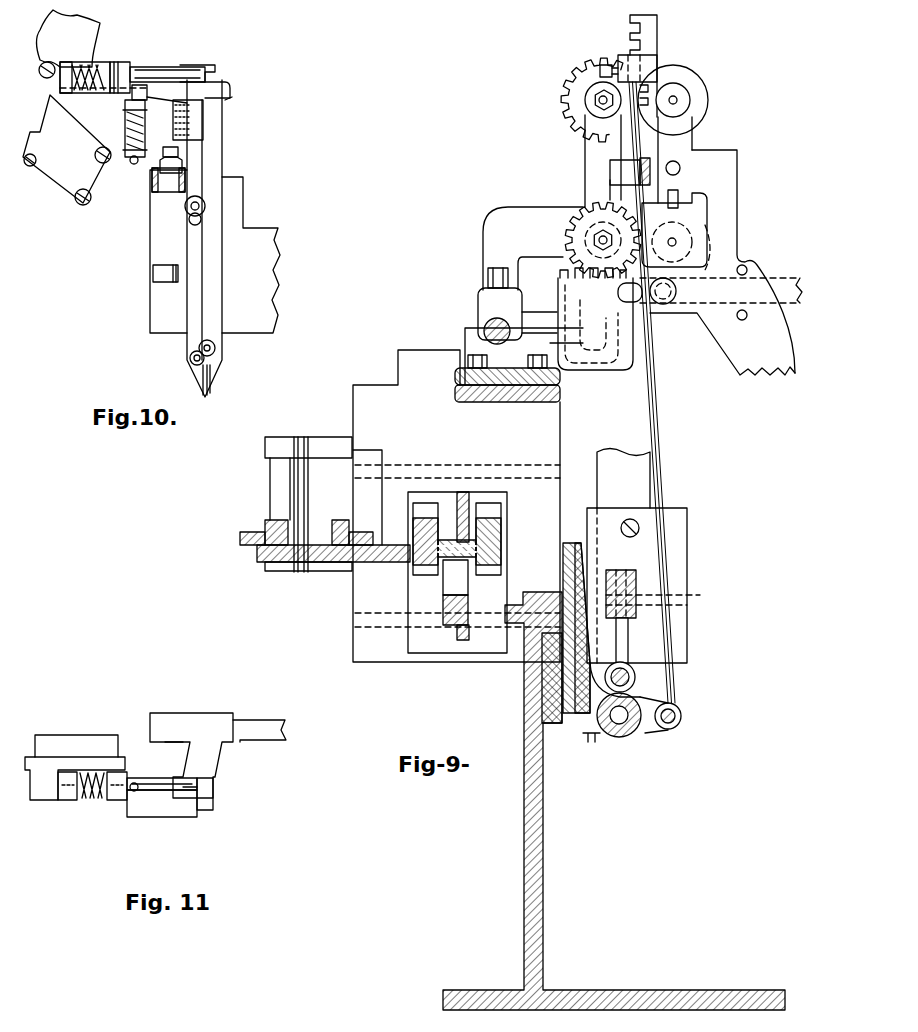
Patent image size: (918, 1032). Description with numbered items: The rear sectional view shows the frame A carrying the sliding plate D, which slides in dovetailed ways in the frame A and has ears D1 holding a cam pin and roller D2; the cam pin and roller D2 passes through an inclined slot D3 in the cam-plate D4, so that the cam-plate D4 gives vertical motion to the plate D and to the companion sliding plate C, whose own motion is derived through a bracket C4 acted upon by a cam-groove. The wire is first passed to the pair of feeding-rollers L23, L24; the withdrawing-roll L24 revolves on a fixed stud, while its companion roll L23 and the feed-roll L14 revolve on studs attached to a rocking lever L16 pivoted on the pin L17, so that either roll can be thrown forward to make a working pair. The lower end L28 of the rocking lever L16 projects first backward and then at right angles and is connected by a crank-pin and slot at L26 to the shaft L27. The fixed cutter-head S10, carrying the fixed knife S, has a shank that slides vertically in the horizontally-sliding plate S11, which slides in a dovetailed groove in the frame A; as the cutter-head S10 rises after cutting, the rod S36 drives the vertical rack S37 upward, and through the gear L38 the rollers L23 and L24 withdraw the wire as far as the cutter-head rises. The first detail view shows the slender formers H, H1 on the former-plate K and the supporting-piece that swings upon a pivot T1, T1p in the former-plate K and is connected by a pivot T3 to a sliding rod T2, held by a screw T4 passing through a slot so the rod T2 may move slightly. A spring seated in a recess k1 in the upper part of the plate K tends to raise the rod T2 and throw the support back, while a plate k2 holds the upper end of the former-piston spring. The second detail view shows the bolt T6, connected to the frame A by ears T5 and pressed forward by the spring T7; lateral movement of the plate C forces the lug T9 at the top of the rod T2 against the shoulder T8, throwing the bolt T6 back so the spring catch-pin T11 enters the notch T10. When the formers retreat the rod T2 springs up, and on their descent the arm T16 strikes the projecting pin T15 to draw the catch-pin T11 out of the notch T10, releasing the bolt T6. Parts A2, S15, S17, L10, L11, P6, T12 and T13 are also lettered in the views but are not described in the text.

In FIG. 9, the frame A is at (524, 840).
In FIG. 10, the frame A is at (69, 44).
In FIG. 11, the frame A is at (75, 757).
In FIG. 9, the frame arm A2 is at (722, 320).
In FIG. 9, the fixed knife S is at (601, 619).
In FIG. 9, the fixed cutter-head S10 is at (618, 735).
In FIG. 9, the horizontally-sliding plate S11 is at (545, 680).
In FIG. 9, the slide box S15 is at (652, 556).
In FIG. 9, the slide rod S17 is at (629, 631).
In FIG. 9, the rod S36 is at (656, 392).
In FIG. 9, the vertical rack S37 is at (657, 27).
In FIG. 9, the rail L10 is at (770, 280).
In FIG. 9, the gear wheel L11 is at (601, 180).
In FIG. 9, the feed-roll L14 is at (705, 228).
In FIG. 9, the rocking lever L16 is at (675, 160).
In FIG. 9, the pin L17 is at (680, 166).
In FIG. 9, the withdrawing-roll L23 is at (710, 100).
In FIG. 9, the withdrawing-roll L24 is at (566, 82).
In FIG. 9, the crank-pin and slot L26 is at (488, 275).
In FIG. 9, the shaft L27 is at (484, 313).
In FIG. 9, the lower end of rocking lever L28 is at (510, 207).
In FIG. 9, the gear L38 is at (583, 60).
In FIG. 10, the sliding plate C is at (251, 255).
In FIG. 11, the sliding plate C is at (259, 731).
In FIG. 9, the bracket C4 is at (325, 504).
In FIG. 9, the sliding plate D is at (412, 567).
In FIG. 9, the ears D1 is at (502, 543).
In FIG. 9, the cam pin and roller D2 is at (457, 549).
In FIG. 9, the inclined slot D3 is at (456, 580).
In FIG. 9, the cam-plate D4 is at (446, 593).
In FIG. 10, the former-plate K is at (204, 238).
In FIG. 11, the former-plate K is at (195, 755).
In FIG. 10, the plate P6 is at (67, 150).
In FIG. 10, the pivot T1 is at (169, 270).
In FIG. 10, the pivot T1p is at (215, 348).
In FIG. 10, the sliding rod T2 is at (199, 313).
In FIG. 11, the sliding rod T2 is at (200, 812).
In FIG. 10, the pivot T3 is at (190, 360).
In FIG. 10, the screw T4 is at (205, 206).
In FIG. 11, the screw T4 is at (92, 802).
In FIG. 10, the ears T5 is at (118, 62).
In FIG. 11, the ears T5 is at (63, 802).
In FIG. 10, the bolt T6 is at (168, 67).
In FIG. 11, the bolt T6 is at (150, 778).
In FIG. 10, the spring T7 is at (100, 62).
In FIG. 10, the shoulder T8 is at (197, 65).
In FIG. 10, the lug T9 is at (216, 82).
In FIG. 10, the notch T10 is at (148, 67).
In FIG. 10, the spring catch-pin T11 is at (125, 108).
In FIG. 10, the block T12 is at (158, 92).
In FIG. 10, the block T13 is at (70, 77).
In FIG. 10, the projecting pin T15 is at (135, 164).
In FIG. 11, the projecting pin T15 is at (162, 800).
In FIG. 10, the arm T16 is at (167, 100).
In FIG. 11, the arm T16 is at (165, 831).
In FIG. 10, the recess k1 is at (205, 118).
In FIG. 11, the recess k1 is at (200, 800).
In FIG. 10, the plate k2 is at (232, 97).
In FIG. 10, the former H is at (210, 372).
In FIG. 10, the former H1 is at (212, 385).